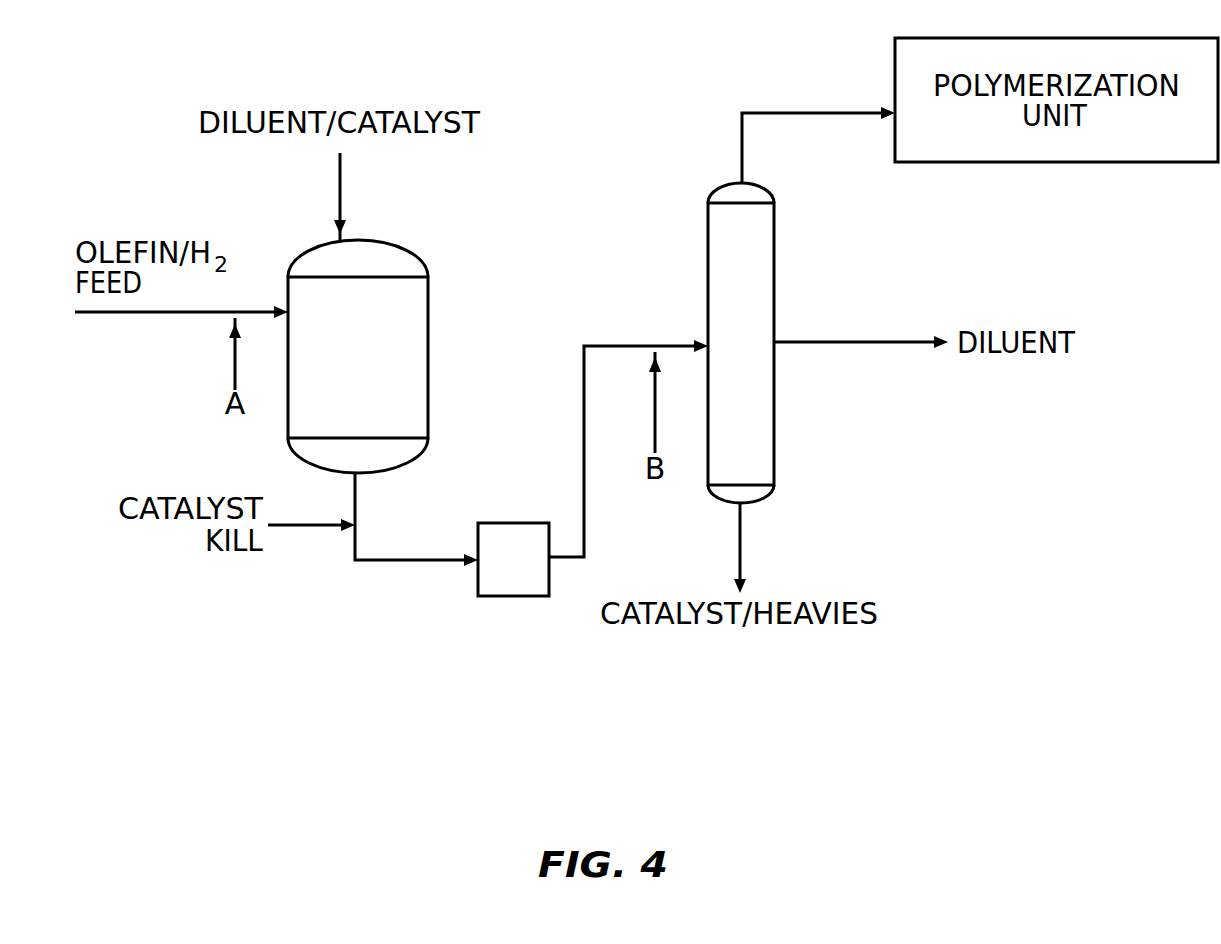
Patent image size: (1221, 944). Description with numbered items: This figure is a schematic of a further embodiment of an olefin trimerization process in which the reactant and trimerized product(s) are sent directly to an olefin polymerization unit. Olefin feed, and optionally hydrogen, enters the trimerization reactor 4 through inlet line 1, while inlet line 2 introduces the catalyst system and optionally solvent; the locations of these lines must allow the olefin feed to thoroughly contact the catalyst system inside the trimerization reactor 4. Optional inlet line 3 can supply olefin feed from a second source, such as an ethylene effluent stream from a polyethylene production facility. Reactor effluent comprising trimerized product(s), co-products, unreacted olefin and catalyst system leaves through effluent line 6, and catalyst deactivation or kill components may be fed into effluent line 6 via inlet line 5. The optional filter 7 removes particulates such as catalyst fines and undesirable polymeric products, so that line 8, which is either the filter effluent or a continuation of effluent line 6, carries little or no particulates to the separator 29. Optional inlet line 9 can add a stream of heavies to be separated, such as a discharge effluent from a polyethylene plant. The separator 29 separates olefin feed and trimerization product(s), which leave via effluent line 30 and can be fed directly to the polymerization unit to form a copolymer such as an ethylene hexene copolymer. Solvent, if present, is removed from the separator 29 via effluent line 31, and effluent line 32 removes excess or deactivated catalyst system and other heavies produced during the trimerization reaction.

The inlet line 1 is at (115, 313).
The inlet line 2 is at (340, 185).
The inlet line 3 is at (235, 358).
The trimerization reactor 4 is at (428, 297).
The inlet line 5 is at (307, 528).
The effluent line 6 is at (412, 563).
The filter 7 is at (495, 523).
The line 8 is at (584, 392).
The inlet line 9 is at (655, 413).
The separator 29 is at (708, 218).
The effluent line 30 is at (788, 113).
The effluent line 31 is at (830, 342).
The effluent line 32 is at (740, 545).